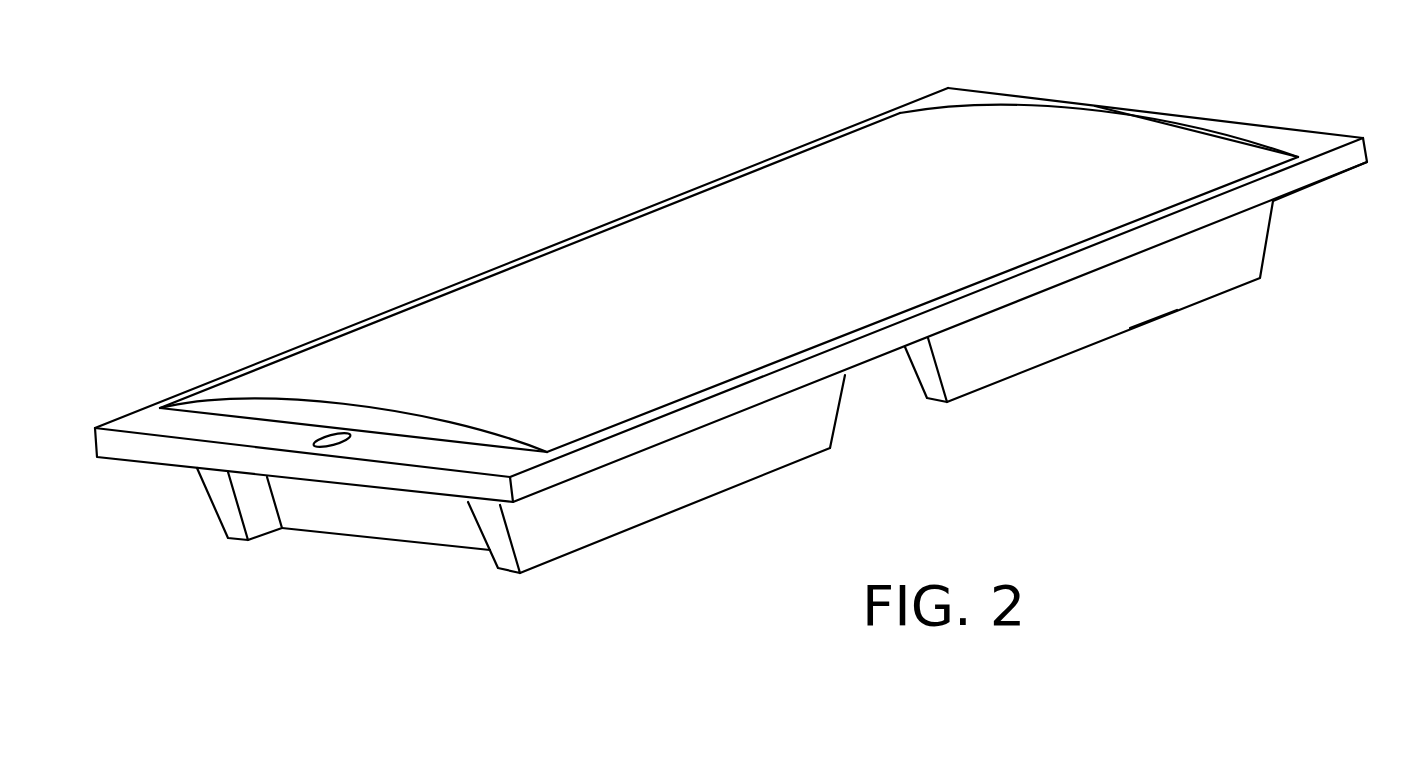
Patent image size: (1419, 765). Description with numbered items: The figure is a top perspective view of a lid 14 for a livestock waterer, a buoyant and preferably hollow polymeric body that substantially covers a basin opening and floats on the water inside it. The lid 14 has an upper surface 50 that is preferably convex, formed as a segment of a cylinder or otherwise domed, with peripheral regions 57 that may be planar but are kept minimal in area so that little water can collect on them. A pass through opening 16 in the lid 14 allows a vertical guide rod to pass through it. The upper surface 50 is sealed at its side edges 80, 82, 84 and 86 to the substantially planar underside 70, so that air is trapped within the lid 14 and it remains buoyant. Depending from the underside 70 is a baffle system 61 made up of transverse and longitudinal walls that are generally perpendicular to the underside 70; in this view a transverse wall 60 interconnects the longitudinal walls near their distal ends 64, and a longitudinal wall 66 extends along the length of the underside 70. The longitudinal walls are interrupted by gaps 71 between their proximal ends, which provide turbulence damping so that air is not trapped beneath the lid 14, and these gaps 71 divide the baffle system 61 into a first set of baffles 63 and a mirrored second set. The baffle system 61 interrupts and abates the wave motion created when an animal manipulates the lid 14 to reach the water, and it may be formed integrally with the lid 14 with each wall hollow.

The lid 14 is at (580, 176).
The pass through opening 16 is at (327, 437).
The upper surface 50 is at (1097, 138).
The peripheral region 57 is at (133, 425).
The transverse wall 60 is at (410, 525).
The baffle system 61 is at (1267, 260).
The first set of baffles 63 is at (537, 568).
The distal end 64 is at (223, 502).
The longitudinal wall 66 is at (265, 523).
The underside 70 is at (1323, 182).
The gap 71 is at (878, 407).
The side edge 80 is at (165, 450).
The side edge 82 is at (967, 308).
The side edge 84 is at (432, 290).
The side edge 86 is at (1307, 130).